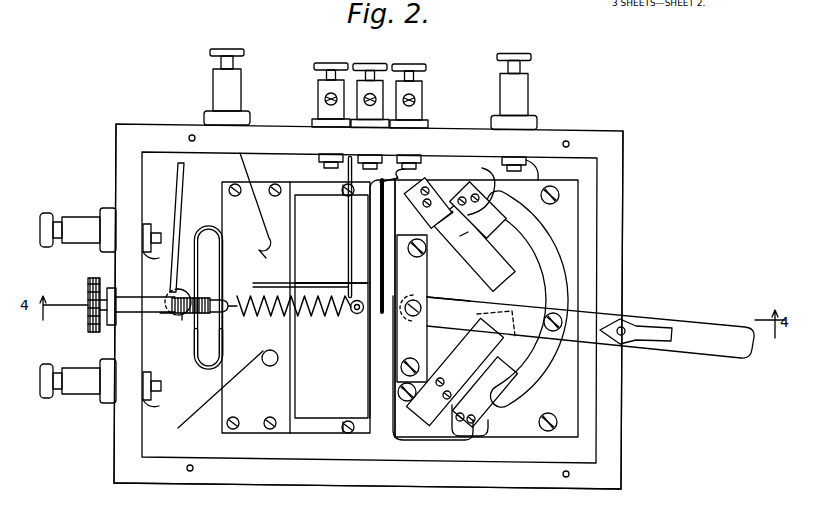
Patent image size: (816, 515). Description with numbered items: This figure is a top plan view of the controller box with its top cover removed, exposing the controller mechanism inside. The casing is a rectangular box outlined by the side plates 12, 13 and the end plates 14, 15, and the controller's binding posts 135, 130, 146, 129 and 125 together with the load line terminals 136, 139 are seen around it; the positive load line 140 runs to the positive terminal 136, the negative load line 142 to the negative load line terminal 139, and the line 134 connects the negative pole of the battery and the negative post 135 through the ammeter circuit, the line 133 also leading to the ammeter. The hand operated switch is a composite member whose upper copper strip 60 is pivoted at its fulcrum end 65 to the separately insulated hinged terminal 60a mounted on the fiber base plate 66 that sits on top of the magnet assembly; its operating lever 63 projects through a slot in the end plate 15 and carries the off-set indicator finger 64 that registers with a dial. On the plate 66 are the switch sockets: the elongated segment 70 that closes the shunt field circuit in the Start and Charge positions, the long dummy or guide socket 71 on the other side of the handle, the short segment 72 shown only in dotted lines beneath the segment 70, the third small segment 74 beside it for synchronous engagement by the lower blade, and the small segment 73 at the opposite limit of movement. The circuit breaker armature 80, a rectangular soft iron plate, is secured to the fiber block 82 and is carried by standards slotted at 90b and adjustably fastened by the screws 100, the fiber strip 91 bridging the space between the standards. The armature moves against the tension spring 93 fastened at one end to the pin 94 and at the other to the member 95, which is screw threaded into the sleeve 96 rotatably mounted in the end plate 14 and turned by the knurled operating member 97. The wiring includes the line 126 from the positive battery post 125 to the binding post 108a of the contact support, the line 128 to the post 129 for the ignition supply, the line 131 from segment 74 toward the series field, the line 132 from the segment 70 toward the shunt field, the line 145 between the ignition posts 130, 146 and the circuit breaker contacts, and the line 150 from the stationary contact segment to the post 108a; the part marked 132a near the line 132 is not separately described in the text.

The side plate 12 is at (367, 478).
The side plate 13 is at (160, 126).
The end plate 14 is at (116, 176).
The end plate 15 is at (610, 203).
The switch member 60 is at (455, 300).
The hinged terminal 60a is at (412, 308).
The operating lever 63 is at (707, 325).
The indicator finger 64 is at (632, 322).
The pivot 65 is at (424, 310).
The fiber base plate 66 is at (486, 308).
The elongated switch segment 70 is at (474, 248).
The dummy guide socket 71 is at (455, 371).
The short switch segment 72 is at (470, 245).
The small switch segment 73 is at (485, 396).
The third small segment 74 is at (478, 210).
The circuit breaker armature 80 is at (370, 371).
The fiber block 82 is at (331, 239).
The slot 90b is at (346, 178).
The fiber strip 91 is at (296, 307).
The tension spring 93 is at (294, 313).
The pin 94 is at (356, 315).
The adjustable member 95 is at (184, 318).
The sleeve 96 is at (163, 318).
The operating member 97 is at (88, 292).
The fastening screws 100 is at (342, 190).
The binding post 108a is at (172, 292).
The binding post 125 is at (522, 88).
The line 126 is at (183, 184).
The line 128 is at (378, 235).
The post 129 is at (423, 90).
The binding post 130 is at (318, 93).
The line 131 is at (477, 187).
The line 132 is at (440, 195).
The contact plate clip 132a is at (433, 378).
The line 133 is at (245, 372).
The line 134 is at (262, 202).
The binding post 135 is at (214, 80).
The positive load line terminal 136 is at (80, 218).
The negative load line terminal 139 is at (80, 396).
The positive load line 140 is at (148, 224).
The negative load line 142 is at (203, 398).
The line 145 is at (221, 236).
The ignition binding post 146 is at (367, 60).
The line 150 is at (205, 356).